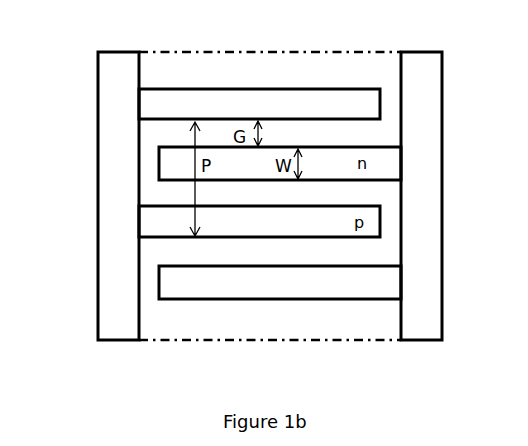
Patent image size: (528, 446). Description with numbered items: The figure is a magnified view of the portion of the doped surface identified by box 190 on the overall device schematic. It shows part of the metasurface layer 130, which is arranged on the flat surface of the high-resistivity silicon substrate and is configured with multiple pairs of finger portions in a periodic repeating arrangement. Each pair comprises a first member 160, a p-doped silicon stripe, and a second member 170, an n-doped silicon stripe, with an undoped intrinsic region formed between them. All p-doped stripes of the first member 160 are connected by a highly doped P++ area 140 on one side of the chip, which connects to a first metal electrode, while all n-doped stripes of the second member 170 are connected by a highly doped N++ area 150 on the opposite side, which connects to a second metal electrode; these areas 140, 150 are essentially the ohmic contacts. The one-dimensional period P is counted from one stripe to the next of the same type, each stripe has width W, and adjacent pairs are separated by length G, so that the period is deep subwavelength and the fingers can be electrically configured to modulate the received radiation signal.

The metasurface layer 130 is at (186, 322).
The highly doped P++ area 140 is at (122, 322).
The highly doped N++ area 150 is at (425, 220).
The first member 160 is at (250, 103).
The second member 170 is at (263, 280).
The box 190 is at (343, 342).